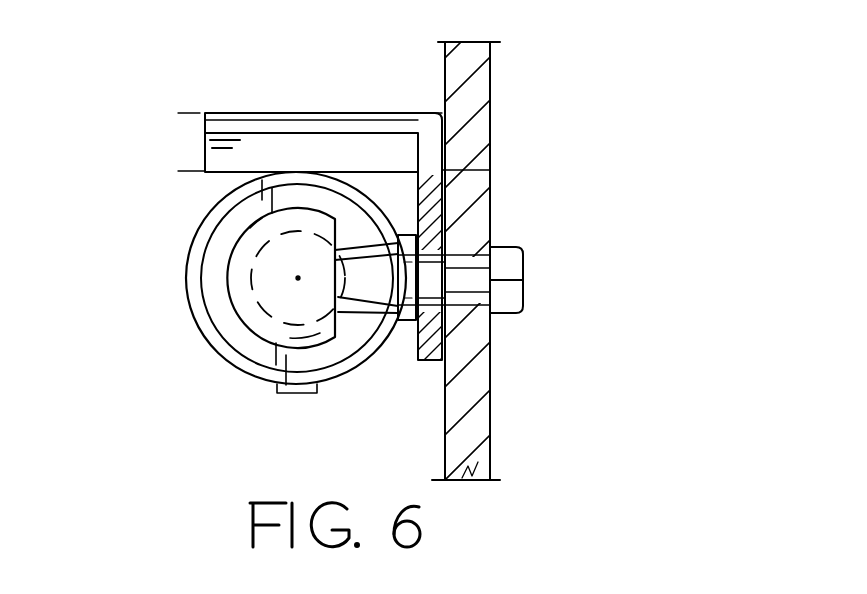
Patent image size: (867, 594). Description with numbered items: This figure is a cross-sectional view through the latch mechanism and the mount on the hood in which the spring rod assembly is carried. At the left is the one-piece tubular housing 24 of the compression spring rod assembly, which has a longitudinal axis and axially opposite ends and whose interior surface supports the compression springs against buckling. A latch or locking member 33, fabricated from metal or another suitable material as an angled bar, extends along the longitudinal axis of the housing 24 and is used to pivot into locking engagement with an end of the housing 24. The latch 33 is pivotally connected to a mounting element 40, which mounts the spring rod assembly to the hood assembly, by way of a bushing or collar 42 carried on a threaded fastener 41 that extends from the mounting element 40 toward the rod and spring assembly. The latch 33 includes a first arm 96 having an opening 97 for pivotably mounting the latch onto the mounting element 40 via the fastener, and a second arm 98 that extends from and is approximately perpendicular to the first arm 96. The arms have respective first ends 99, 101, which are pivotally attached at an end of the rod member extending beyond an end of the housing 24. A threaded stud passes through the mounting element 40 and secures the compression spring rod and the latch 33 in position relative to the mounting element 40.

The tubular housing 24 is at (224, 348).
The latch 33 is at (208, 145).
The mounting element 40 is at (450, 480).
The threaded fastener 41 is at (492, 284).
The bushing 42 is at (405, 320).
The first arm 96 is at (447, 165).
The opening 97 is at (450, 242).
The second arm 98 is at (214, 125).
The first end 99 is at (280, 148).
The first end 101 is at (433, 145).